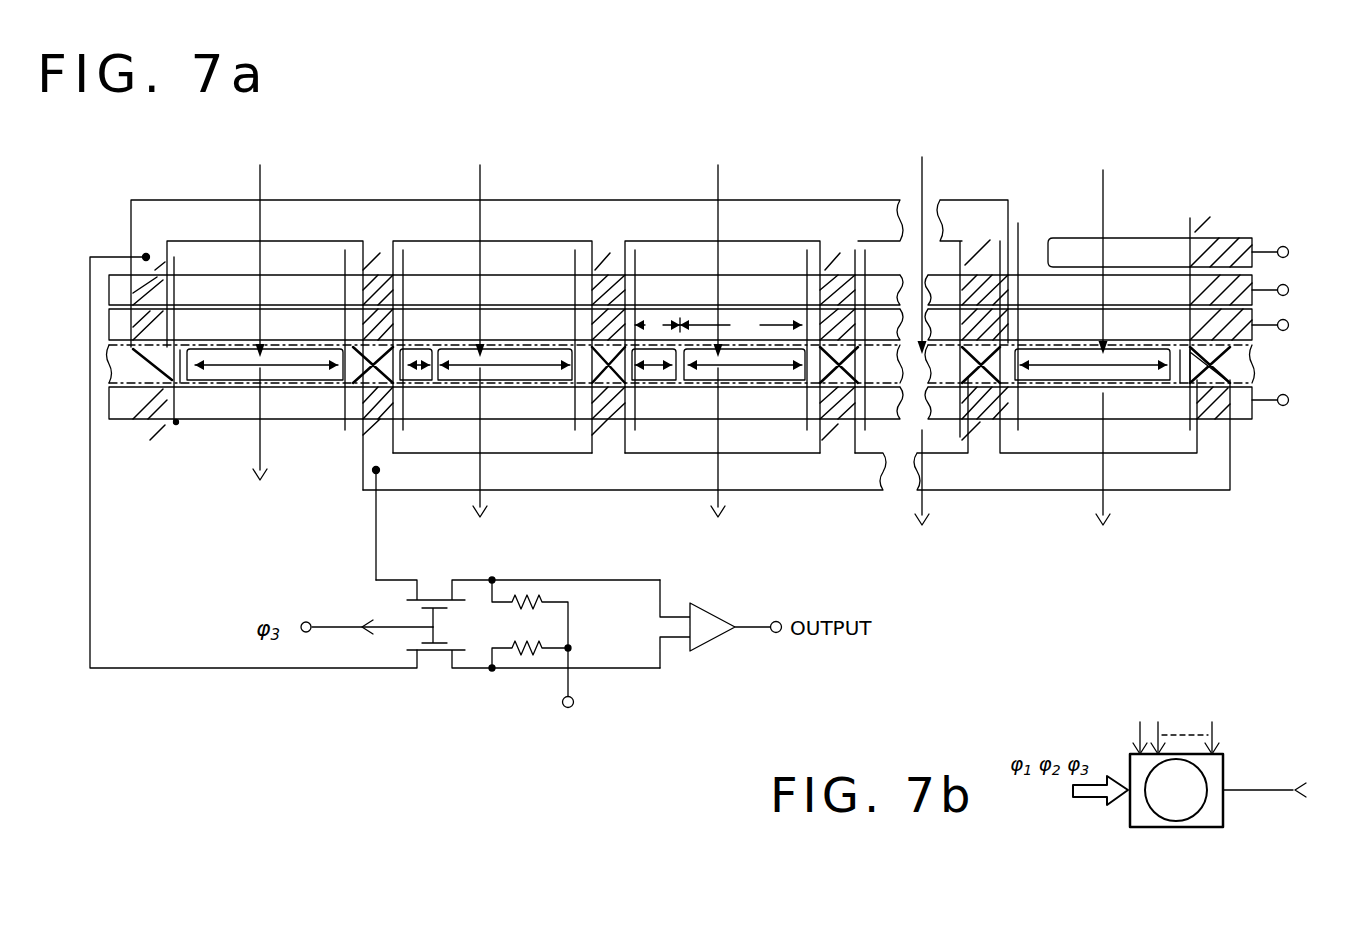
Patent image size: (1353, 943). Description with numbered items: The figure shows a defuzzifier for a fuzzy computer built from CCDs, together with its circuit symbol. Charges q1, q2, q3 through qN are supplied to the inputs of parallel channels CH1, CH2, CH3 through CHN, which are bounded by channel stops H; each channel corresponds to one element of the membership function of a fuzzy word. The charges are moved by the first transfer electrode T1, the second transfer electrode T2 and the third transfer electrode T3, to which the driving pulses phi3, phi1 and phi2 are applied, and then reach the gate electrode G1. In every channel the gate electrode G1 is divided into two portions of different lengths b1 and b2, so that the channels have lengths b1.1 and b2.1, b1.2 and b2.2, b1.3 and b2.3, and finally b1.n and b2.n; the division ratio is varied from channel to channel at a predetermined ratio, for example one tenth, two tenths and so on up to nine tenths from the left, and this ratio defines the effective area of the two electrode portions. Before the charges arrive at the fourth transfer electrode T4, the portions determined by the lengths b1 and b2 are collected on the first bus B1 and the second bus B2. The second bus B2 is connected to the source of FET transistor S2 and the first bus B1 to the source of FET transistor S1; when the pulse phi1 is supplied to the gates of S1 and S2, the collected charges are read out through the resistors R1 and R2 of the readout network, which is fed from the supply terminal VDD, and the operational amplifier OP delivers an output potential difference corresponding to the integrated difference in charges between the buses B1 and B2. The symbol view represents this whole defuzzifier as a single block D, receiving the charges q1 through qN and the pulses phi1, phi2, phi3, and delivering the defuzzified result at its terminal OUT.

In FIG. 7A, the first bus B1 is at (573, 208).
In FIG. 7A, the second bus B2 is at (796, 410).
In FIG. 7A, the first transfer electrode T1 is at (1150, 252).
In FIG. 7A, the second transfer electrode T2 is at (680, 290).
In FIG. 7A, the third transfer electrode T3 is at (680, 324).
In FIG. 7A, the fourth transfer electrode T4 is at (680, 403).
In FIG. 7A, the gate electrode G1 is at (1252, 362).
In FIG. 7A, the channel stop H is at (1190, 425).
In FIG. 7A, the channel CH1 is at (265, 261).
In FIG. 7A, the channel CH2 is at (492, 261).
In FIG. 7A, the channel CH3 is at (722, 261).
In FIG. 7A, the channel CHN is at (1074, 253).
In FIG. 7A, the charge q1 is at (253, 310).
In FIG. 7B, the charge q1 is at (1136, 726).
In FIG. 7A, the charge q2 is at (475, 329).
In FIG. 7A, the charge q3 is at (712, 329).
In FIG. 7A, the charge qN is at (1096, 333).
In FIG. 7B, the charge qN is at (1208, 726).
In FIG. 7A, the length b1 is at (657, 326).
In FIG. 7A, the length b2 is at (741, 326).
In FIG. 7A, the length b1.1 is at (176, 422).
In FIG. 7A, the length b2.1 is at (270, 420).
In FIG. 7A, the length b1.2 is at (417, 420).
In FIG. 7A, the length b2.2 is at (497, 368).
In FIG. 7A, the length b1.3 is at (657, 367).
In FIG. 7A, the length b2.3 is at (735, 367).
In FIG. 7A, the length b1.n is at (1078, 370).
In FIG. 7A, the length b2.n is at (1197, 383).
In FIG. 7A, the driving pulse phi1 is at (1286, 348).
In FIG. 7A, the driving pulse phi2 is at (1286, 328).
In FIG. 7A, the driving pulse phi3 is at (1286, 255).
In FIG. 7A, the FET transistor S1 is at (432, 657).
In FIG. 7A, the FET transistor S2 is at (433, 594).
In FIG. 7A, the resistor R1 is at (528, 636).
In FIG. 7A, the resistor R2 is at (517, 642).
In FIG. 7A, the supply voltage terminal VDD is at (564, 717).
In FIG. 7A, the operational amplifier OP is at (716, 604).
In FIG. 7B, the detector block D is at (1176, 790).
In FIG. 7B, the output OUT is at (1265, 806).